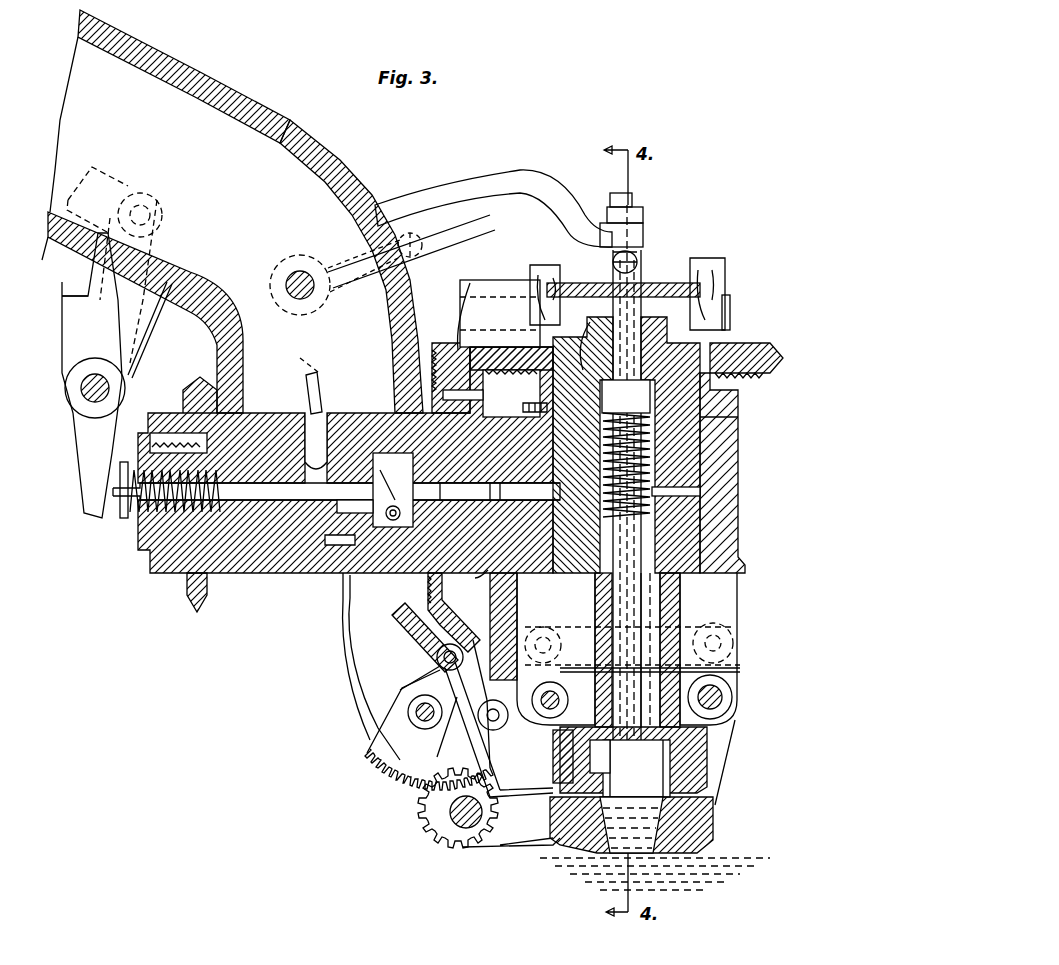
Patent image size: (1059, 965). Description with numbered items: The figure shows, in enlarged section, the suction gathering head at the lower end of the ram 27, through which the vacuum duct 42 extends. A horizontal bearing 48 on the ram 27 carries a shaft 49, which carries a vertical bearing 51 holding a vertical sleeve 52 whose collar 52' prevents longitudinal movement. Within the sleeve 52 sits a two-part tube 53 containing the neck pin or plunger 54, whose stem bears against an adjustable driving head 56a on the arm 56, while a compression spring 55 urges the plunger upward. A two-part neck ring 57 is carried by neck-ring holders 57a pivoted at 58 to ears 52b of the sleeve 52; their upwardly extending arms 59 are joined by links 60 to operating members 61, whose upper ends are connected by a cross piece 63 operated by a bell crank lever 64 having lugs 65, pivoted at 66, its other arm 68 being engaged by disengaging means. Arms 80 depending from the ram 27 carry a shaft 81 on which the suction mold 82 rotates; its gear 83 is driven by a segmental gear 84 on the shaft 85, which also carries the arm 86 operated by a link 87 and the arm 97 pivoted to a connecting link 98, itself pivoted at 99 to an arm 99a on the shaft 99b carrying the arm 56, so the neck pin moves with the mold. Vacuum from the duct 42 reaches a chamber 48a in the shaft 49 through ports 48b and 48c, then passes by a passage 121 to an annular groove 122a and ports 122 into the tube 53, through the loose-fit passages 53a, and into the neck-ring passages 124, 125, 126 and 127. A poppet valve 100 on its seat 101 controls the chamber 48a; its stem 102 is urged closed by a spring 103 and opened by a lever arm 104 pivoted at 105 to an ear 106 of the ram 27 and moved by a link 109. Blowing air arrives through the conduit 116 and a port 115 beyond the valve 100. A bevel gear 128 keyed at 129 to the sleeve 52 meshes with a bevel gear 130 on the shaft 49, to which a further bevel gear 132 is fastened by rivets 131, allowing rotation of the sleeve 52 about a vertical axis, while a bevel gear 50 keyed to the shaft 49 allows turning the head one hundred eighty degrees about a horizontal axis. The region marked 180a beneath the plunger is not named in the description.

The ram 27 is at (132, 50).
The duct 42 is at (218, 125).
The link 109 is at (115, 190).
The lever arm 104 is at (92, 295).
The pivot 105 is at (85, 395).
The ear 106 is at (150, 337).
The compression spring 103 is at (128, 512).
The sleeve or bearing 48 is at (285, 548).
The shaft or supporting member 49 is at (258, 548).
The chamber 48a is at (328, 548).
The bevel gear 50 is at (187, 596).
The valve stem 102 is at (290, 486).
The port 48b is at (322, 468).
The conduit 116 is at (310, 372).
The valve 100 is at (393, 490).
The port 115 is at (397, 506).
The valve seat 101 is at (372, 507).
The annular groove 122a is at (500, 490).
The bevel gear 132 is at (430, 352).
The port 48c is at (432, 385).
The arm 68 is at (470, 342).
The passage 121 is at (495, 413).
The bevel gear 130 is at (528, 588).
The shaft 99b is at (290, 275).
The arm 99a is at (348, 248).
The pivot 99 is at (430, 244).
The arm 56 is at (522, 190).
The adjustable driving head 56a is at (640, 263).
The two-part hollow member or sleeve 53 is at (700, 330).
The cross piece 63 is at (570, 283).
The bell crank lever 64 is at (545, 283).
The lugs 65 is at (553, 278).
The pivot 66 is at (730, 305).
The key 129 is at (586, 333).
The bevel gear 128 is at (755, 356).
The bearing or sleeve 51 is at (700, 458).
The vertical supporting member 52 is at (739, 473).
The collar 52' is at (756, 403).
The compression spring 55 is at (655, 440).
The ports 122 is at (700, 491).
The operating members 61 is at (598, 590).
The passages 53a is at (665, 598).
The ears or extensions 52b is at (743, 605).
The upwardly extending arms 59 is at (753, 648).
The links 60 is at (525, 630).
The neck pin or plunger 54 is at (742, 669).
The pivot 58 is at (722, 694).
The arms 80 is at (360, 685).
The rivets 131 is at (430, 596).
The link 87 is at (398, 630).
The arm 86 is at (428, 672).
The arm 97 is at (480, 705).
The connecting link 98 is at (490, 700).
The shaft 85 is at (408, 712).
The segmental gear 84 is at (395, 768).
The gear 83 is at (440, 833).
The shaft 81 is at (470, 828).
The neck-ring holder 57a is at (710, 733).
The neck ring 57 is at (672, 760).
The passage 126 is at (705, 745).
The passage 127 is at (700, 773).
The passage 124 is at (560, 750).
The passages 125 is at (590, 770).
The suction mold 82 is at (715, 821).
The liquid 180a is at (630, 828).